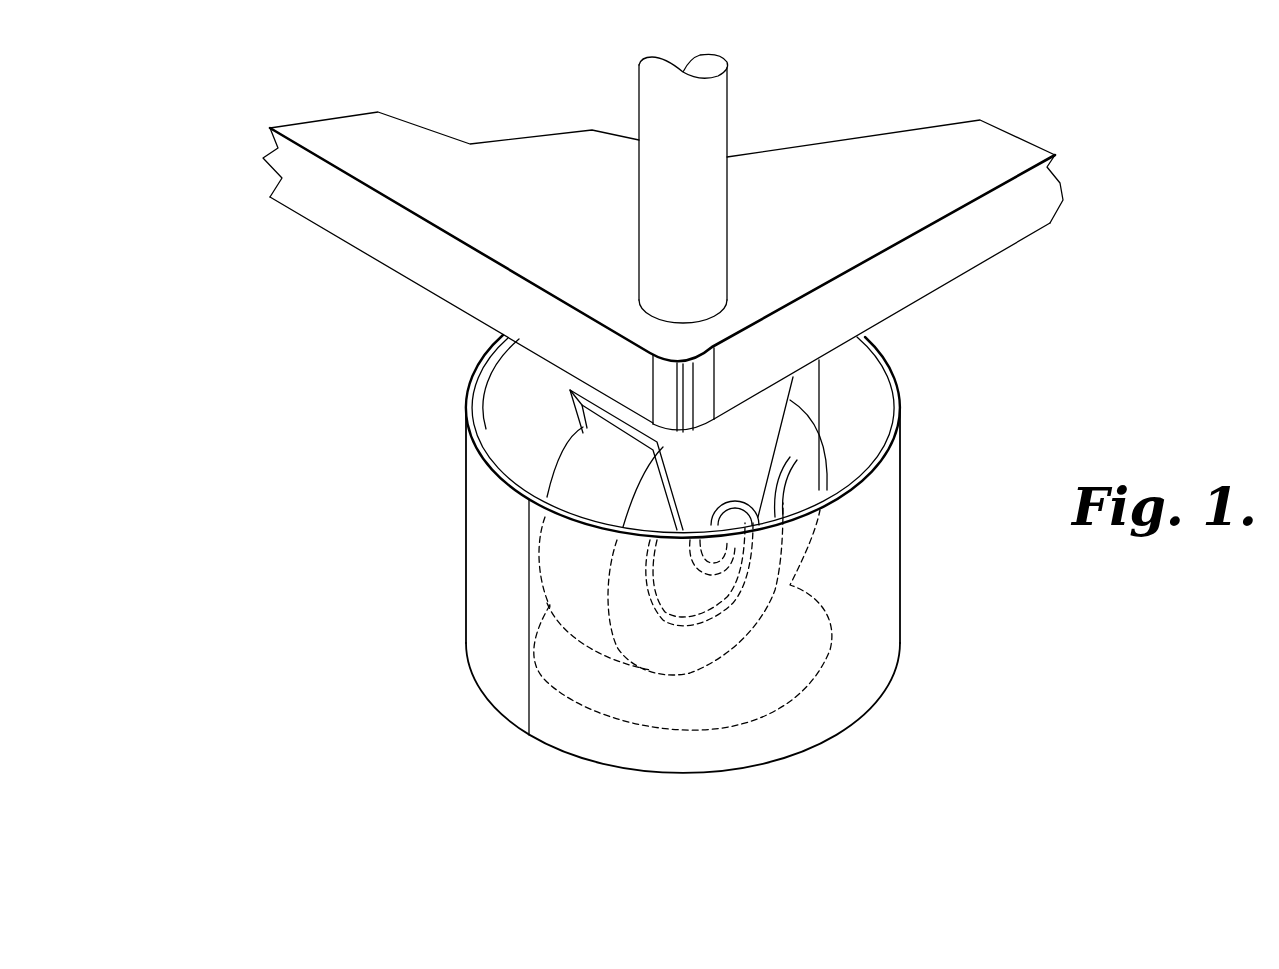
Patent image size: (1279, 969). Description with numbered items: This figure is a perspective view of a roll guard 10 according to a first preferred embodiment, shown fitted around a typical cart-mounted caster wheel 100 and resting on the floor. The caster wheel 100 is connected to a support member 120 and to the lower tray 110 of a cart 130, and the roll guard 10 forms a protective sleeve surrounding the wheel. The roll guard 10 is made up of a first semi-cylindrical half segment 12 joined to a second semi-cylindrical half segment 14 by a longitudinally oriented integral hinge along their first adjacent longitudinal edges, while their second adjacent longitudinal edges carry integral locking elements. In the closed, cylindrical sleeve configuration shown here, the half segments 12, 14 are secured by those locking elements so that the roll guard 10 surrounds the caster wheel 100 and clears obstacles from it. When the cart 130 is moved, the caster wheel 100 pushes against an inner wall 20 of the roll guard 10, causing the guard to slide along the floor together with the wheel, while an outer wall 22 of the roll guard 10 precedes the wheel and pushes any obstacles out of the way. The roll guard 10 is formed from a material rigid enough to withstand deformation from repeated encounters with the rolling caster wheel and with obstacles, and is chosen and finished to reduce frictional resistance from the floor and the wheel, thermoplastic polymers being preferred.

The roll guard 10 is at (292, 339).
The first semi-cylindrical half segment 12 is at (456, 429).
The second semi-cylindrical half segment 14 is at (912, 610).
The inner wall 20 is at (853, 412).
The outer wall 22 is at (900, 533).
The caster wheel 100 is at (802, 473).
The lower tray 110 is at (1040, 197).
The support member 120 is at (687, 468).
The cart 130 is at (1048, 128).